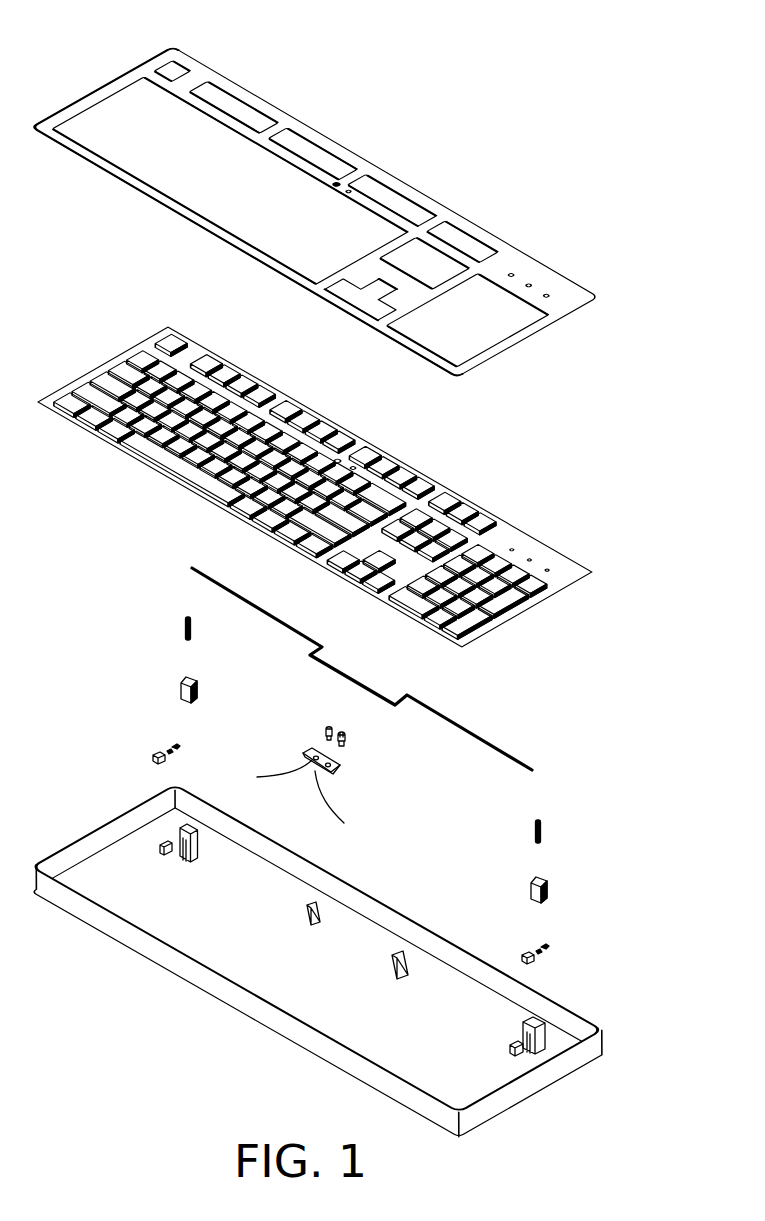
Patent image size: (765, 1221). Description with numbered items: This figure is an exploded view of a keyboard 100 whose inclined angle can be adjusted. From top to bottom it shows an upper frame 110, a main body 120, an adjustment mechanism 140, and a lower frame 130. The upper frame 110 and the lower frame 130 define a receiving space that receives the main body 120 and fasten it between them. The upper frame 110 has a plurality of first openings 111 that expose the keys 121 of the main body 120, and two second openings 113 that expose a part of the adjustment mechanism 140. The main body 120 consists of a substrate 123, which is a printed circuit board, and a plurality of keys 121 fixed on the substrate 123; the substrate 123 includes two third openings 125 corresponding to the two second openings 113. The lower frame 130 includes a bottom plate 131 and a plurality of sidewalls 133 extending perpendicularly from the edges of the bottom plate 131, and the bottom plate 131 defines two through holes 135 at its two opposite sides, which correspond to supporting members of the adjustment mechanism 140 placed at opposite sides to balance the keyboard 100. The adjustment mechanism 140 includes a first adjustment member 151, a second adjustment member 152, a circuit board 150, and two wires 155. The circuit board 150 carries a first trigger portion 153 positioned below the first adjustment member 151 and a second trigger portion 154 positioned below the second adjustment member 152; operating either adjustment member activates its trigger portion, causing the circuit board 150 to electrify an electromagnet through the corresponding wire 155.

The keyboard 100 is at (353, 37).
The upper frame 110 is at (515, 231).
The first openings 111 is at (314, 214).
The second openings 113 is at (342, 188).
The main body 120 is at (597, 541).
The keys 121 is at (341, 455).
The substrate 123 is at (315, 487).
The third openings 125 is at (344, 465).
The lower frame 130 is at (565, 982).
The bottom plate 131 is at (317, 960).
The sidewalls 133 is at (316, 961).
The through holes 135 is at (177, 842).
The adjustment mechanism 140 is at (170, 567).
The circuit board 150 is at (340, 764).
The first adjustment member 151 is at (328, 726).
The second adjustment member 152 is at (344, 737).
The first trigger portion 153 is at (314, 757).
The second trigger portion 154 is at (338, 769).
The wires 155 is at (338, 801).